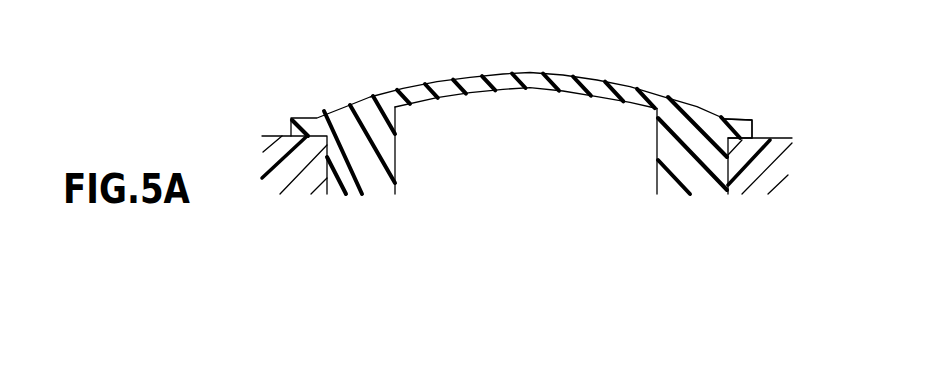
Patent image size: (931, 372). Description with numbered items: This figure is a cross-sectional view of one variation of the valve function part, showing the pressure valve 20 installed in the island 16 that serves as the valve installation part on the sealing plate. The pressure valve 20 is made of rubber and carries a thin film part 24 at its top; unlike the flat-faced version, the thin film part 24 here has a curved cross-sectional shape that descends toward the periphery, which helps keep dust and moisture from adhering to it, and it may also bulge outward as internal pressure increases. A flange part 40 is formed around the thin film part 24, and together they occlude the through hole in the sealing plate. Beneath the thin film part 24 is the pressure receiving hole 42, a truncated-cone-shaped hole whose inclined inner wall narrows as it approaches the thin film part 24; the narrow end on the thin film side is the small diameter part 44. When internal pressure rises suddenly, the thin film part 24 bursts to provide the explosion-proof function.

The island 16 is at (275, 128).
The pressure valve 20 is at (507, 208).
The thin film part 24 is at (521, 128).
The flange part 40 is at (738, 120).
The pressure receiving hole 42 is at (398, 175).
The small diameter part 44 is at (397, 176).